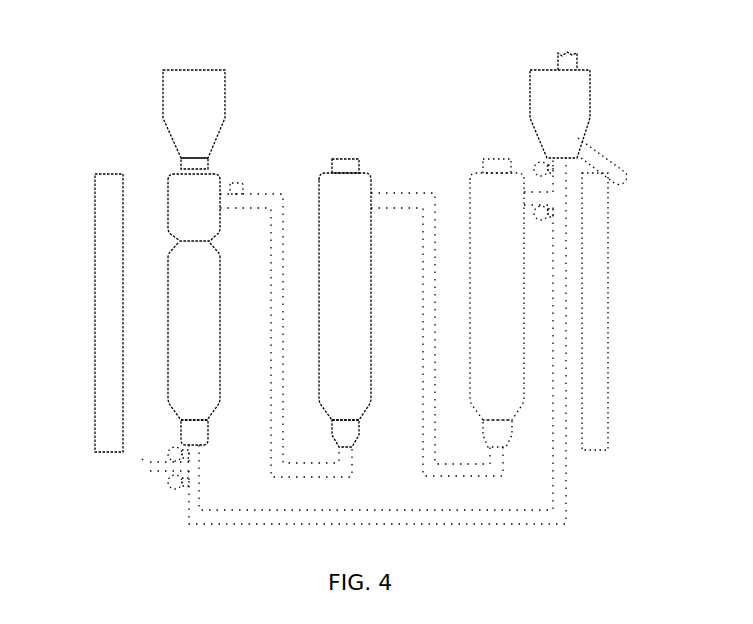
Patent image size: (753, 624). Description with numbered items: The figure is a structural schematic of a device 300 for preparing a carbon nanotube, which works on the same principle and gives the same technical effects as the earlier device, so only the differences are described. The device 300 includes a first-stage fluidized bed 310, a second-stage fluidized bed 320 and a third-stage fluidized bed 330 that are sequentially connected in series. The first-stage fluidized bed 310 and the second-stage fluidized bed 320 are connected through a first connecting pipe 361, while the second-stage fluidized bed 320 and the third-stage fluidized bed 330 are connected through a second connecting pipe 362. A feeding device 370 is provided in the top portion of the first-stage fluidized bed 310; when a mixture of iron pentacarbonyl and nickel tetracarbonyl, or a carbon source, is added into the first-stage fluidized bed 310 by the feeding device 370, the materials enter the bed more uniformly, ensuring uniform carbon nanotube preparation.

The device for preparing a carbon nanotube 300 is at (383, 37).
The first-stage fluidized bed 310 is at (142, 338).
The second-stage fluidized bed 320 is at (384, 154).
The third-stage fluidized bed 330 is at (543, 375).
The first connecting pipe 361 is at (272, 193).
The second connecting pipe 362 is at (430, 193).
The feeding device 370 is at (177, 107).